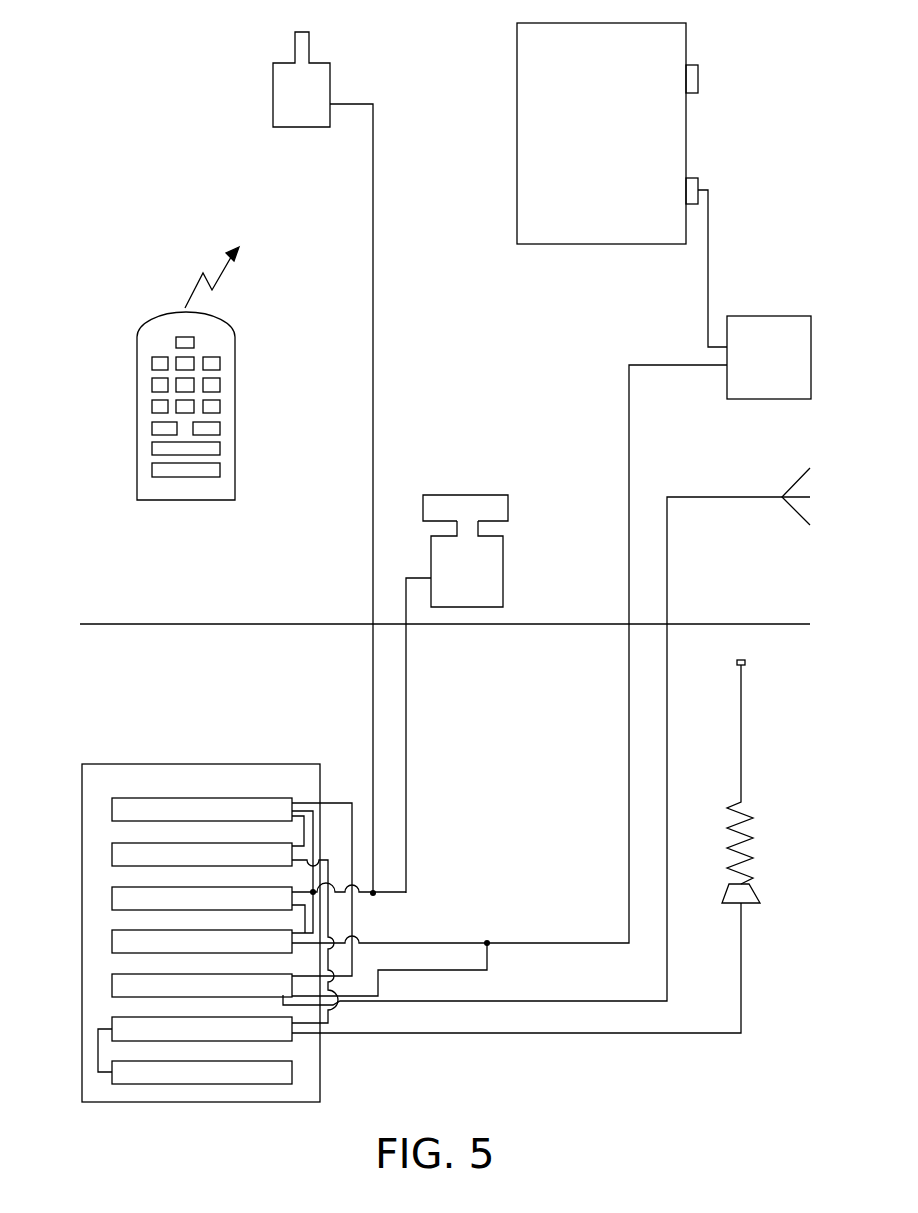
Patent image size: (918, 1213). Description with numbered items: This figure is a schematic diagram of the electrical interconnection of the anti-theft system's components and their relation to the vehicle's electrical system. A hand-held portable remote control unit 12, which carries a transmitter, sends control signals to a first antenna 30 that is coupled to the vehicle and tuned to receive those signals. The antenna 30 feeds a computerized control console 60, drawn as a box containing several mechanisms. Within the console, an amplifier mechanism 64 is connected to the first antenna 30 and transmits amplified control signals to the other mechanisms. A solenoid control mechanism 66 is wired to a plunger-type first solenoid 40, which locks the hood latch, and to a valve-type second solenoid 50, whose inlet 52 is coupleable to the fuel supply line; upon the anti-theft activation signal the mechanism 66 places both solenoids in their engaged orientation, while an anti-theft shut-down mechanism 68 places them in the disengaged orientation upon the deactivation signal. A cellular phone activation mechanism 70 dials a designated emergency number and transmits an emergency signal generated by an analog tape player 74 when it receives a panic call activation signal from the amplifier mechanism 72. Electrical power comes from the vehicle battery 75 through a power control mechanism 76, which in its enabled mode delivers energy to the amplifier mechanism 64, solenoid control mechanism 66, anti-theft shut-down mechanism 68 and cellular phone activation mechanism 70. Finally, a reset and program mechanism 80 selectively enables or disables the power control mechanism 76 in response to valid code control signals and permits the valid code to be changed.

The remote control unit 12 is at (235, 383).
The first antenna 30 is at (757, 893).
The first solenoid 40 is at (273, 98).
The second solenoid 50 is at (490, 555).
The inlet 52 is at (432, 502).
The control console 60 is at (320, 1080).
The amplifier mechanism 64 is at (118, 986).
The solenoid control mechanism 66 is at (118, 900).
The anti-theft shut-down mechanism 68 is at (118, 810).
The cellular phone activation mechanism 70 is at (118, 1030).
The amplifier mechanism 72 is at (118, 1077).
The analog tape player 74 is at (118, 943).
The battery 75 is at (550, 133).
The power control mechanism 76 is at (811, 367).
The reset and program mechanism 80 is at (800, 511).